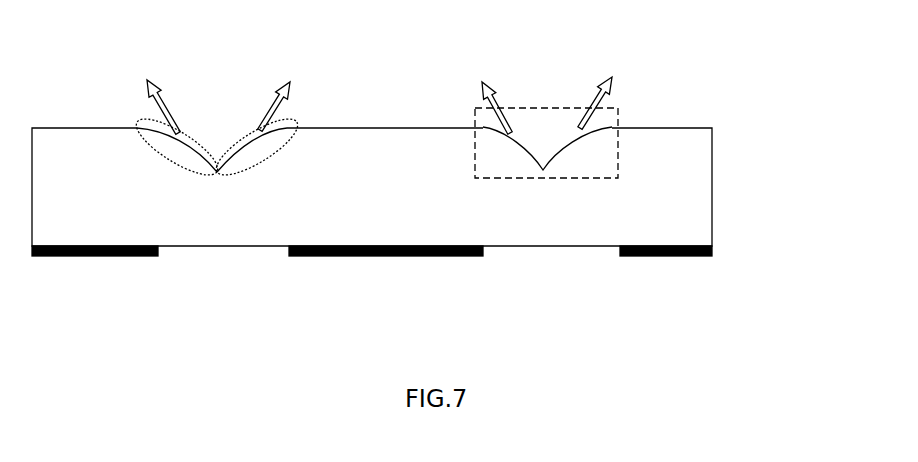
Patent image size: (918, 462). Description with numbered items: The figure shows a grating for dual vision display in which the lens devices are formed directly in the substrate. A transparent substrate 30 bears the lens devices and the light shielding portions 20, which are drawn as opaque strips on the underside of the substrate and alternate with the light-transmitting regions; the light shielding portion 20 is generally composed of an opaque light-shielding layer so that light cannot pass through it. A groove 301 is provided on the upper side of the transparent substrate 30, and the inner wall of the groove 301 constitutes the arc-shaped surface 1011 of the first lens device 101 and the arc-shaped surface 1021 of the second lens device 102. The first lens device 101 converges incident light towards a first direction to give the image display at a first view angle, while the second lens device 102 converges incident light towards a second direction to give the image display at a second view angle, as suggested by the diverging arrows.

The transparent substrate 30 is at (687, 178).
The light shielding portion 20 is at (688, 254).
The second lens device 102 is at (138, 118).
The arc-shaped surface 1021 is at (180, 133).
The first lens device 101 is at (295, 115).
The arc-shaped surface 1011 is at (253, 138).
The groove 301 is at (553, 107).